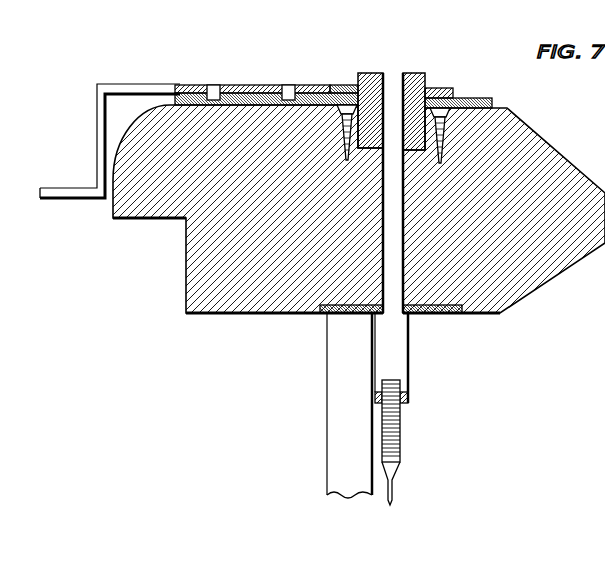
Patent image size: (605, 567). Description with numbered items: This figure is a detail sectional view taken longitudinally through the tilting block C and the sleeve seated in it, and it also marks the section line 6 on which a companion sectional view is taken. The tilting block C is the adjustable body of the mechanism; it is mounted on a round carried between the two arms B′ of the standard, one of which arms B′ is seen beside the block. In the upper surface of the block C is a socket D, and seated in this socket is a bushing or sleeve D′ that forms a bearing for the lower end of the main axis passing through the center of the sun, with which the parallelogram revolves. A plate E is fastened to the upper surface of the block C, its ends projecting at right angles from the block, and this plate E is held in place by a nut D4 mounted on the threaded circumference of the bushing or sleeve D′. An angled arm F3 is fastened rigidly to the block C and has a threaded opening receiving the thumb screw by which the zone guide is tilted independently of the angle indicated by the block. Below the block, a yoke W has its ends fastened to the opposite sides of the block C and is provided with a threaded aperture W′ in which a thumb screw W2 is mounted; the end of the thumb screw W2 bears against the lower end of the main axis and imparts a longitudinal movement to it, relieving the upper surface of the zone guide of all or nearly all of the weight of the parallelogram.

The tilting block C is at (217, 305).
The bore / passage 6 is at (395, 73).
The socket D is at (347, 137).
The nut D4 is at (367, 73).
The bushing or sleeve D′ is at (410, 77).
The plate E is at (453, 88).
The angled arm F3 is at (98, 136).
The yoke W is at (402, 347).
The threaded aperture W′ is at (398, 390).
The thumb screw W2 is at (400, 445).
The arms of the standard B′ is at (345, 462).